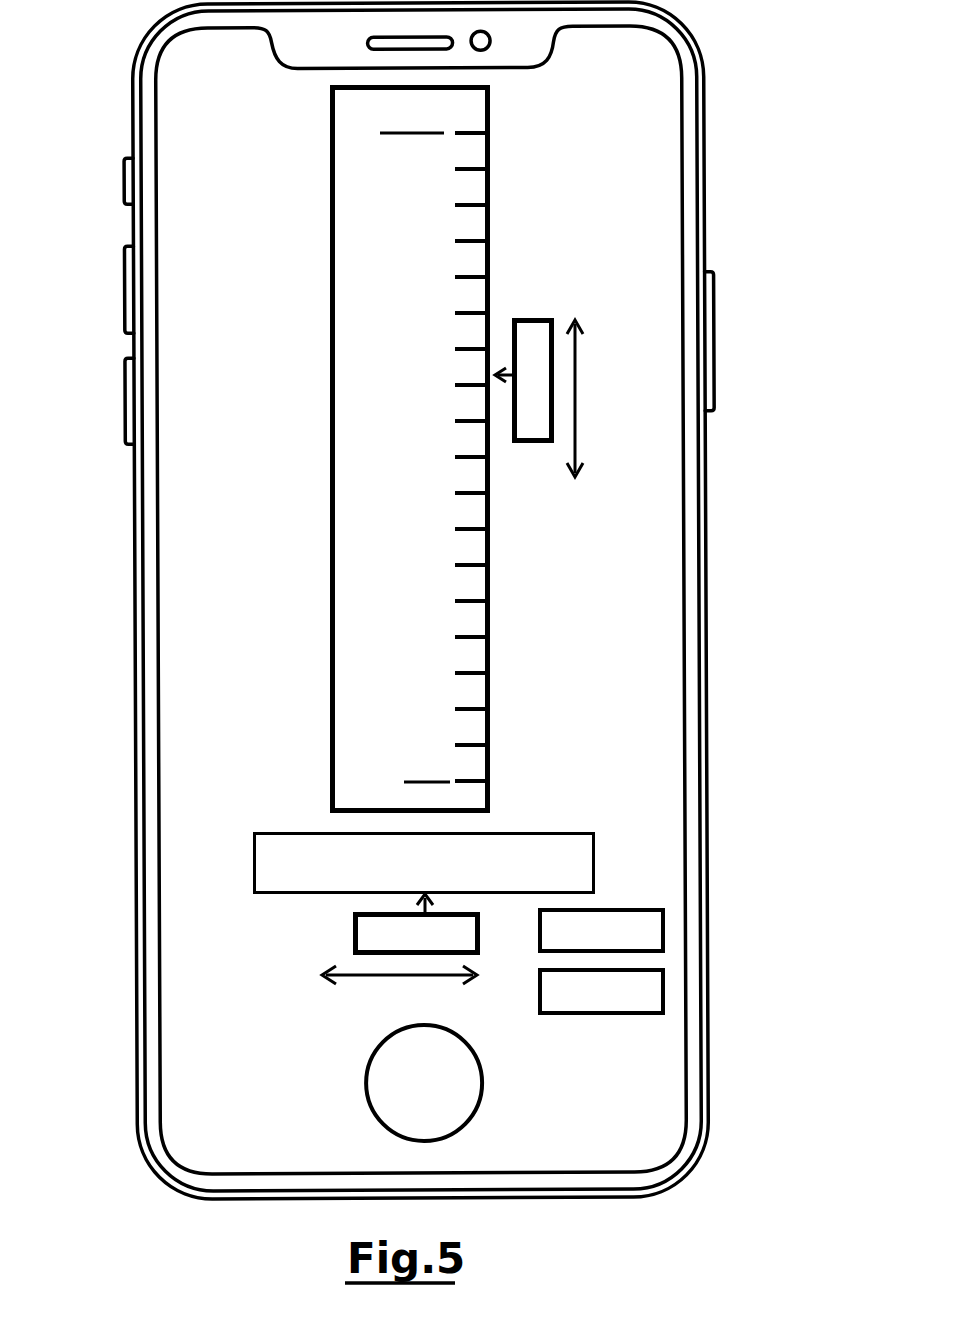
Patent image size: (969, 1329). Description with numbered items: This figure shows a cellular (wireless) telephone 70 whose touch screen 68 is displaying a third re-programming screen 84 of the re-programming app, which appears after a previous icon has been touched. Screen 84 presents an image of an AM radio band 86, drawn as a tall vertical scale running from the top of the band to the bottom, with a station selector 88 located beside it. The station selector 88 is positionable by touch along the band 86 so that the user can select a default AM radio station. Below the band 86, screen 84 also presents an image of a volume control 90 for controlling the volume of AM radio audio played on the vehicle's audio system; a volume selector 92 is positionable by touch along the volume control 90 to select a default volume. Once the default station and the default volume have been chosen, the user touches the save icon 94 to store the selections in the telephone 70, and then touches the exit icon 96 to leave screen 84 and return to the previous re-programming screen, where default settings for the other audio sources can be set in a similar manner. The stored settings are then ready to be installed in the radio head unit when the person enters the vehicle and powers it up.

The cellular telephone 70 is at (710, 164).
The touch screen 68 is at (637, 688).
The screen 84 is at (190, 465).
The AM radio band 86 is at (330, 335).
The station selector 88 is at (532, 317).
The volume control 90 is at (523, 830).
The volume selector 92 is at (353, 930).
The save icon 94 is at (637, 908).
The exit icon 96 is at (618, 1015).